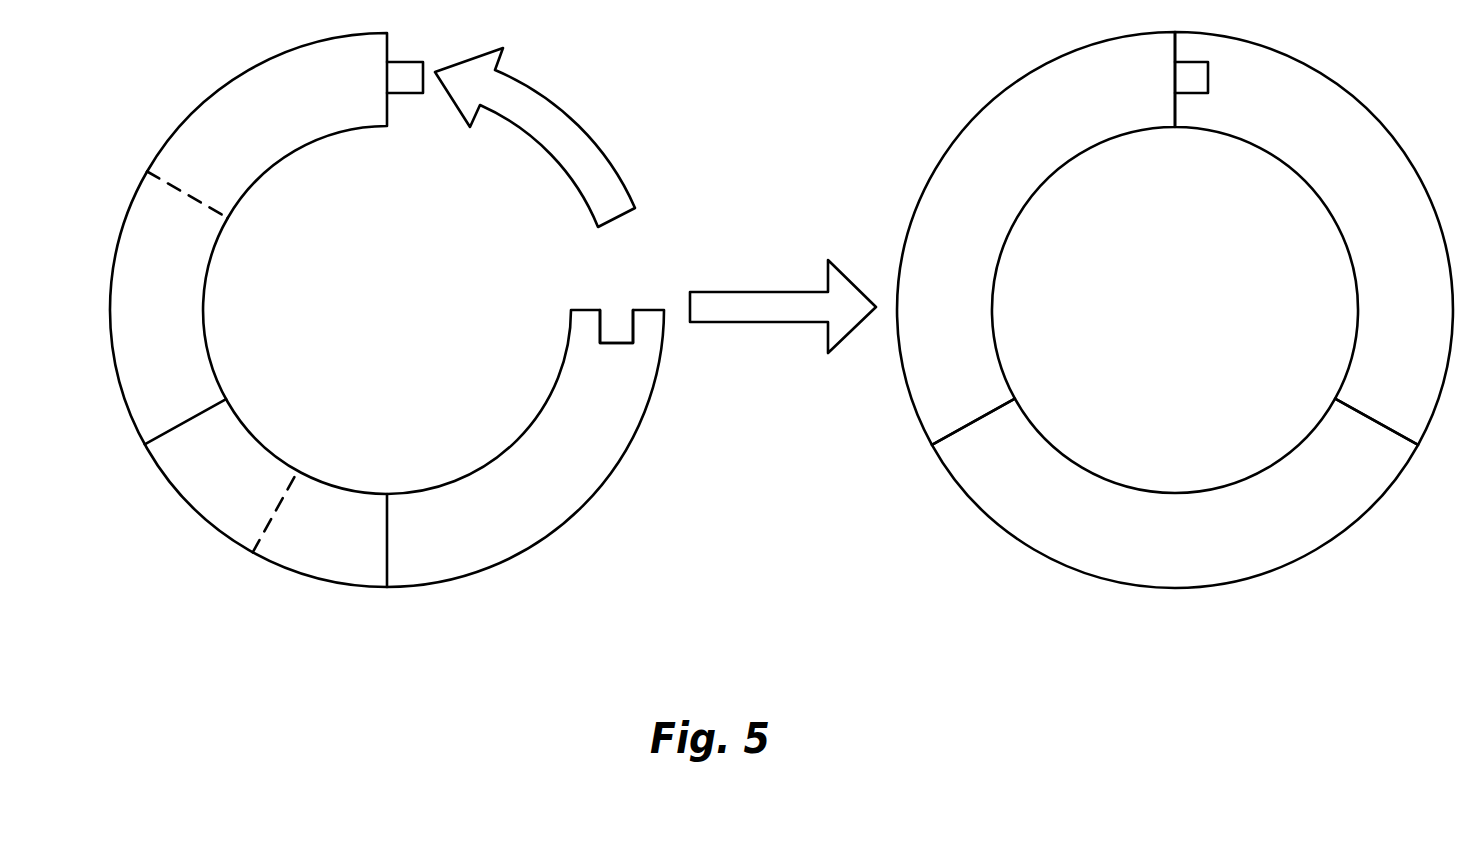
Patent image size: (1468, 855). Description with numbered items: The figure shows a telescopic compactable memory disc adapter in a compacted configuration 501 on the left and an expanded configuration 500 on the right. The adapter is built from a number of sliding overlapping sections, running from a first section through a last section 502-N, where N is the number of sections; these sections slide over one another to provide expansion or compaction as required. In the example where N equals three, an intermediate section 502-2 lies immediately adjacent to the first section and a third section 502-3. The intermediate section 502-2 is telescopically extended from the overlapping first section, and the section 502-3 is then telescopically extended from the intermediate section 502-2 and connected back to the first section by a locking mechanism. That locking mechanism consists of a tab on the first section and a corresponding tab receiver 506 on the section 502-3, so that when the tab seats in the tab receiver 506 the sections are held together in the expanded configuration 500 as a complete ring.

The expanded configuration 500 is at (1172, 333).
The compacted configuration 501 is at (391, 322).
The intermediate section 502-2 is at (1208, 551).
The sliding overlapping section 502-3 is at (1445, 319).
The sliding overlapping section 502-N is at (587, 481).
The tab receiver 506 is at (617, 318).